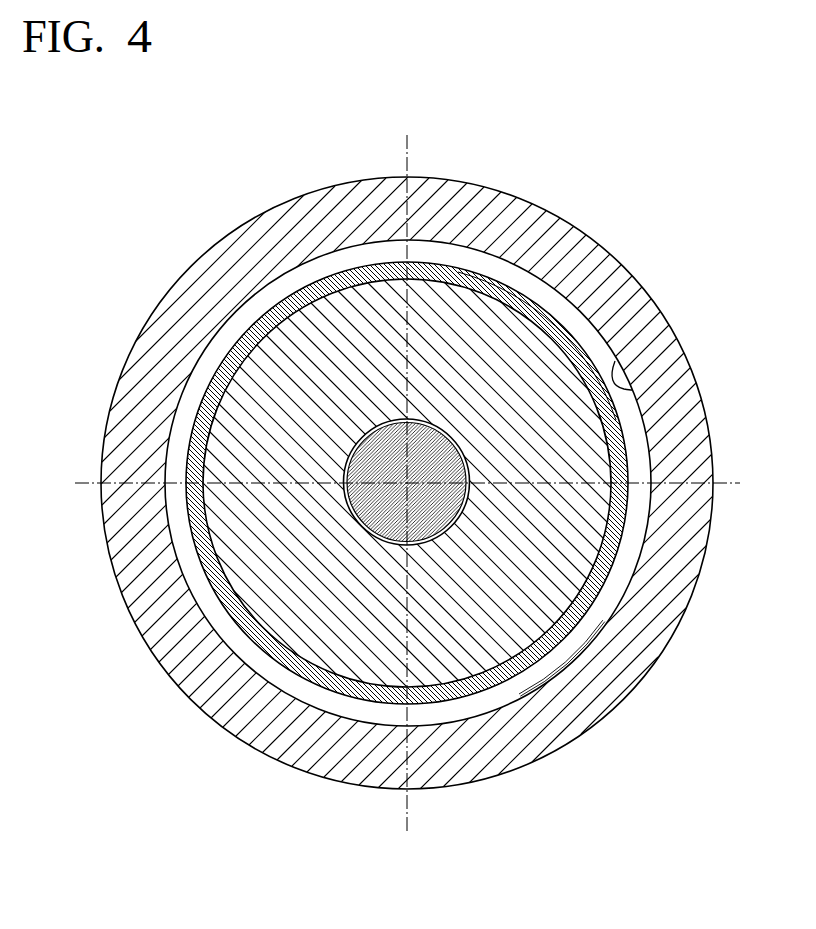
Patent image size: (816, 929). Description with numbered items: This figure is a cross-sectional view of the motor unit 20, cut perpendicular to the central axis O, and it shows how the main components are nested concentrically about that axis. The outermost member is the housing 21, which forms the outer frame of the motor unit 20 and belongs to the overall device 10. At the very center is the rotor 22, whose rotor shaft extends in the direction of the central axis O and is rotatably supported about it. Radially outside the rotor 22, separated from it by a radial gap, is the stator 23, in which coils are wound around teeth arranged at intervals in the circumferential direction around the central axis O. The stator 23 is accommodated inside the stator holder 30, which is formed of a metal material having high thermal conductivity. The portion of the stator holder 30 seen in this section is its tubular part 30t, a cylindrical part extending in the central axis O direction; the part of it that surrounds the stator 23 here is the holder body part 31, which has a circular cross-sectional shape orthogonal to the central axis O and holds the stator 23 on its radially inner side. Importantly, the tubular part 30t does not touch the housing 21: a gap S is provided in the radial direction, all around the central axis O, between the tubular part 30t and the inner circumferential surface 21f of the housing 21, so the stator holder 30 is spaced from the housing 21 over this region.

The optical fiber cable 10 is at (442, 435).
The motor unit 20 is at (442, 435).
The housing 21 is at (523, 218).
The inner circumferential surface 21f is at (633, 388).
The rotor 22 is at (373, 537).
The stator 23 is at (509, 650).
The stator holder 30 is at (492, 495).
The tubular part 30t is at (600, 597).
The holder body part 31 is at (575, 633).
The gap S is at (637, 440).
The central axis O is at (407, 483).